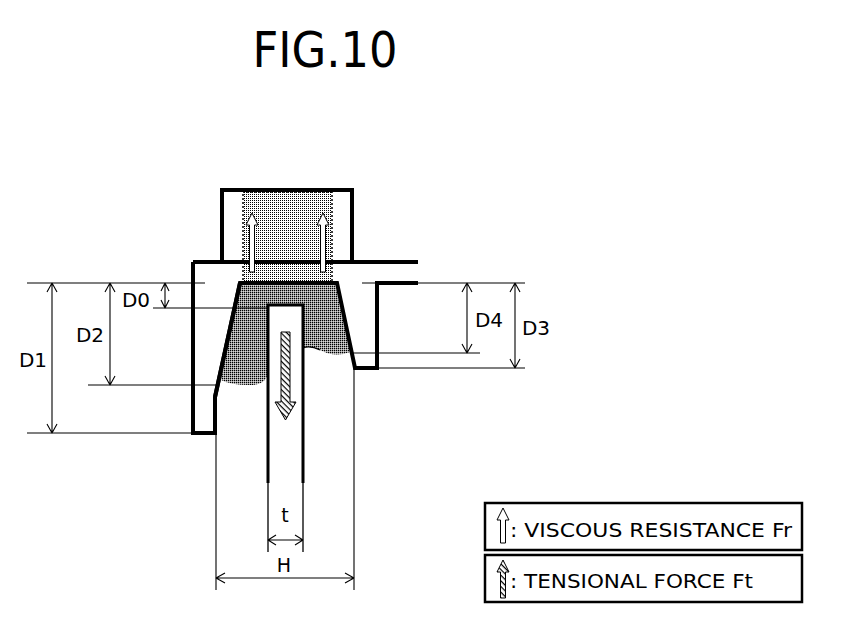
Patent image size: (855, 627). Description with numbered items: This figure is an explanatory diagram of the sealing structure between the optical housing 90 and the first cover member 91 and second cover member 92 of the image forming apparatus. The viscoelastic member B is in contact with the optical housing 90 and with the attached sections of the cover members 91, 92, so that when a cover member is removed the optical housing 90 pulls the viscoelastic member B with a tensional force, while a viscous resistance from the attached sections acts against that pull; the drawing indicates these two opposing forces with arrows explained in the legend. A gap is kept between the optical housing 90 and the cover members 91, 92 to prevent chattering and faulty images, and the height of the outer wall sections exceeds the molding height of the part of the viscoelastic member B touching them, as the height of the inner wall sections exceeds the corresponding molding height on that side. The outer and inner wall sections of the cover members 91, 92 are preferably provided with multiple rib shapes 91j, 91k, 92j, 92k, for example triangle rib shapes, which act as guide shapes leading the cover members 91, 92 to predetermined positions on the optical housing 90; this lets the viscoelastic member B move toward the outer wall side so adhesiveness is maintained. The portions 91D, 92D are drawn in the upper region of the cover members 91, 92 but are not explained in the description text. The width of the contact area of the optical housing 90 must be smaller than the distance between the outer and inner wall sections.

The first cover member 91 is at (339, 311).
The second cover member 92 is at (402, 268).
The ink supply passage of nozzle 91 91D is at (217, 220).
The ink supply passage of nozzle 92 92D is at (243, 188).
The rib shape 91j is at (168, 353).
The rib shape 92j is at (217, 330).
The rib shape 91k is at (381, 347).
The rib shape 92k is at (350, 308).
The viscoelastic member B is at (330, 352).
The optical housing 90 is at (295, 387).